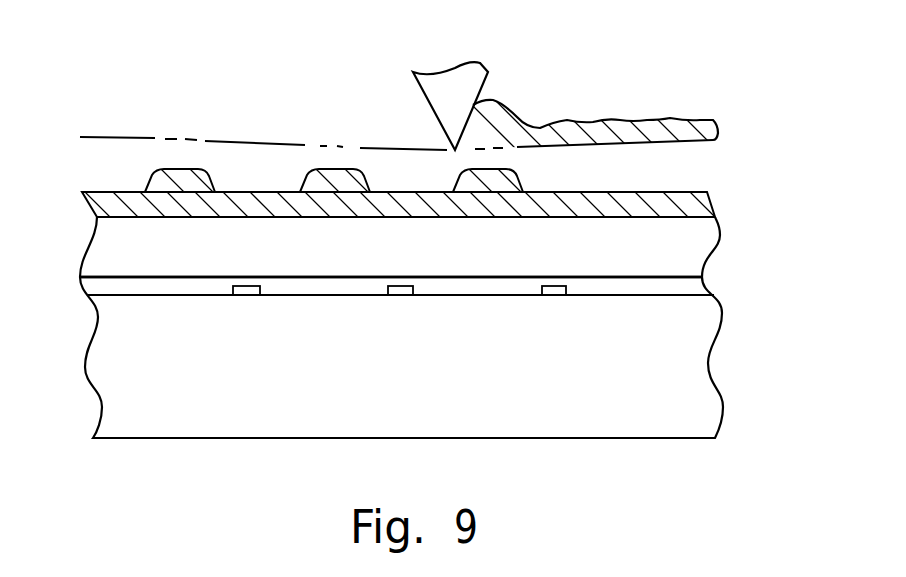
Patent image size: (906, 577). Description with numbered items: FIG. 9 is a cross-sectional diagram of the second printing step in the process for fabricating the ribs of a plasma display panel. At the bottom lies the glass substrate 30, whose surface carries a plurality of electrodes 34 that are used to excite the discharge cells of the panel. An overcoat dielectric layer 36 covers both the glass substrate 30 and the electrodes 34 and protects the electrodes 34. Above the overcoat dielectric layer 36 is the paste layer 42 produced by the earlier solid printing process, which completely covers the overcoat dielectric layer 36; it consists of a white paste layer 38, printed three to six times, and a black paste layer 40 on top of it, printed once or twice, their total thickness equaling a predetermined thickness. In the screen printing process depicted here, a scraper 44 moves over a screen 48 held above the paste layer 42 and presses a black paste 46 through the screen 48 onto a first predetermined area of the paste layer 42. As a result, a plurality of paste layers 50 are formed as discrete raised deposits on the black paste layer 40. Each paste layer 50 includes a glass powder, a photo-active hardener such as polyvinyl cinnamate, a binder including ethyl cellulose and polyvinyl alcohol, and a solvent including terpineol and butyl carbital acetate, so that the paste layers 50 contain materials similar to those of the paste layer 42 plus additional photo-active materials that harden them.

The glass substrate 30 is at (413, 400).
The electrodes 34 is at (243, 292).
The overcoat dielectric layer 36 is at (688, 286).
The white paste layer 38 is at (690, 243).
The black paste layer 40 is at (697, 202).
The paste layer 42 is at (727, 182).
The scraper 44 is at (462, 77).
The black paste 46 is at (608, 133).
The screen 48 is at (144, 138).
The paste layers 50 is at (148, 180).